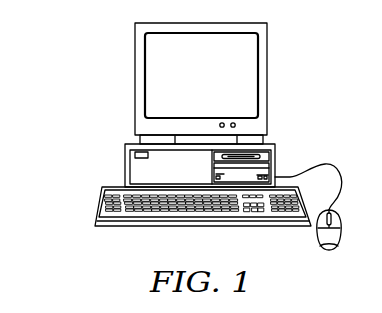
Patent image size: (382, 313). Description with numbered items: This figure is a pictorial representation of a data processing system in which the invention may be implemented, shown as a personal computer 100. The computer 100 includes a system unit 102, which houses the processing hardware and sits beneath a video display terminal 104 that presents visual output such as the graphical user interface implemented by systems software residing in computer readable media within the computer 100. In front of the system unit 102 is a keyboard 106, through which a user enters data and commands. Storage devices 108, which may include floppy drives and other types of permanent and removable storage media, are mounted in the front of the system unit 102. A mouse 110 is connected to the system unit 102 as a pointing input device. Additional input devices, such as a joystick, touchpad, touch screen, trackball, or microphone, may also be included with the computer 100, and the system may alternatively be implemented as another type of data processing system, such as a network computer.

The computer 100 is at (77, 66).
The system unit 102 is at (125, 162).
The video display terminal 104 is at (268, 78).
The keyboard 106 is at (118, 227).
The storage devices 108 is at (275, 158).
The mouse 110 is at (329, 250).